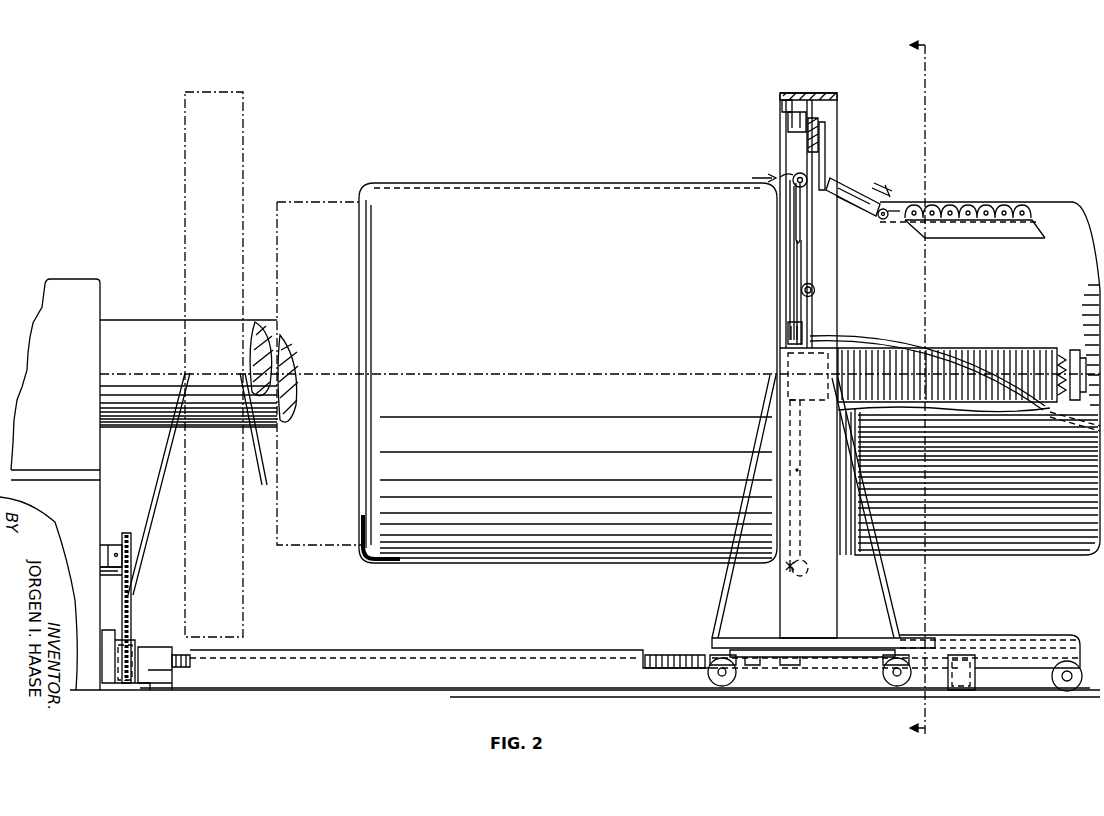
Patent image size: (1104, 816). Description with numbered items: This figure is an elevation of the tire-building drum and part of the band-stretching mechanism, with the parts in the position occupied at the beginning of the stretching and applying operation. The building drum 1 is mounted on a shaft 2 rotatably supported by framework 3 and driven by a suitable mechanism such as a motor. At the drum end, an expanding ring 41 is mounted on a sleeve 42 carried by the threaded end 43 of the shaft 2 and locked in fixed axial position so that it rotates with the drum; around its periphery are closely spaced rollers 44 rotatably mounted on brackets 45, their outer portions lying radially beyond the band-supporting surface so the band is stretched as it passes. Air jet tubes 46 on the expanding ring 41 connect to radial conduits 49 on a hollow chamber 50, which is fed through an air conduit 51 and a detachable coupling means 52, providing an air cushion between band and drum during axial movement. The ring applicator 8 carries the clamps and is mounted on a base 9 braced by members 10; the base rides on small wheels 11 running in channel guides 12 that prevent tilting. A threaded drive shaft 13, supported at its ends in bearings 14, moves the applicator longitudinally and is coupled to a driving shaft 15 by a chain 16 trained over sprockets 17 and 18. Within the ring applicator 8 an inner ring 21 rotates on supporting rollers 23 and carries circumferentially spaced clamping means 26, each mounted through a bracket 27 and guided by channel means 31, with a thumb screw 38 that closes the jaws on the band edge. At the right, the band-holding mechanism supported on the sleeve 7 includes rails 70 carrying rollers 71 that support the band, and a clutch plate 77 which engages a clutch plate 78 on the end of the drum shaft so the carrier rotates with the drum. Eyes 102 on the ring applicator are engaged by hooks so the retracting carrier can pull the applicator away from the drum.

The building drum 1 is at (462, 186).
The shaft 2 is at (130, 322).
The framework 3 is at (62, 284).
The sleeve 7 is at (904, 392).
The ring applicator 8 is at (240, 101).
The base 9 is at (858, 640).
The bracing members 10 is at (728, 599).
The wheels 11 is at (728, 686).
The channel guides 12 is at (557, 652).
The threaded drive shaft 13 is at (672, 656).
The bearings 14 is at (170, 684).
The driving shaft 15 is at (106, 544).
The chain 16 is at (131, 613).
The sprocket 17 is at (110, 568).
The sprocket 18 is at (137, 690).
The inner ring 21 is at (790, 126).
The supporting rollers 23 is at (781, 99).
The clamping means 26 is at (851, 187).
The bracket 27 is at (819, 136).
The channel means / pivot support 31 is at (826, 150).
The thumb screw 38 is at (892, 182).
The expanding ring 41 is at (790, 194).
The sleeve 42 is at (790, 354).
The threaded end 43 is at (1004, 352).
The rollers 44 is at (796, 174).
The brackets 45 is at (790, 568).
The air jet tubes 46 is at (795, 228).
The radial conduits 49 is at (802, 262).
The hollow chamber 50 is at (789, 332).
The air conduit 51 is at (878, 340).
The detachable coupling means 52 is at (1072, 420).
The rails 70 is at (958, 238).
The rollers 71 is at (958, 212).
The clutch plate 77 is at (1074, 352).
The clutch plate 78 is at (1060, 356).
The eyes 102 is at (816, 291).